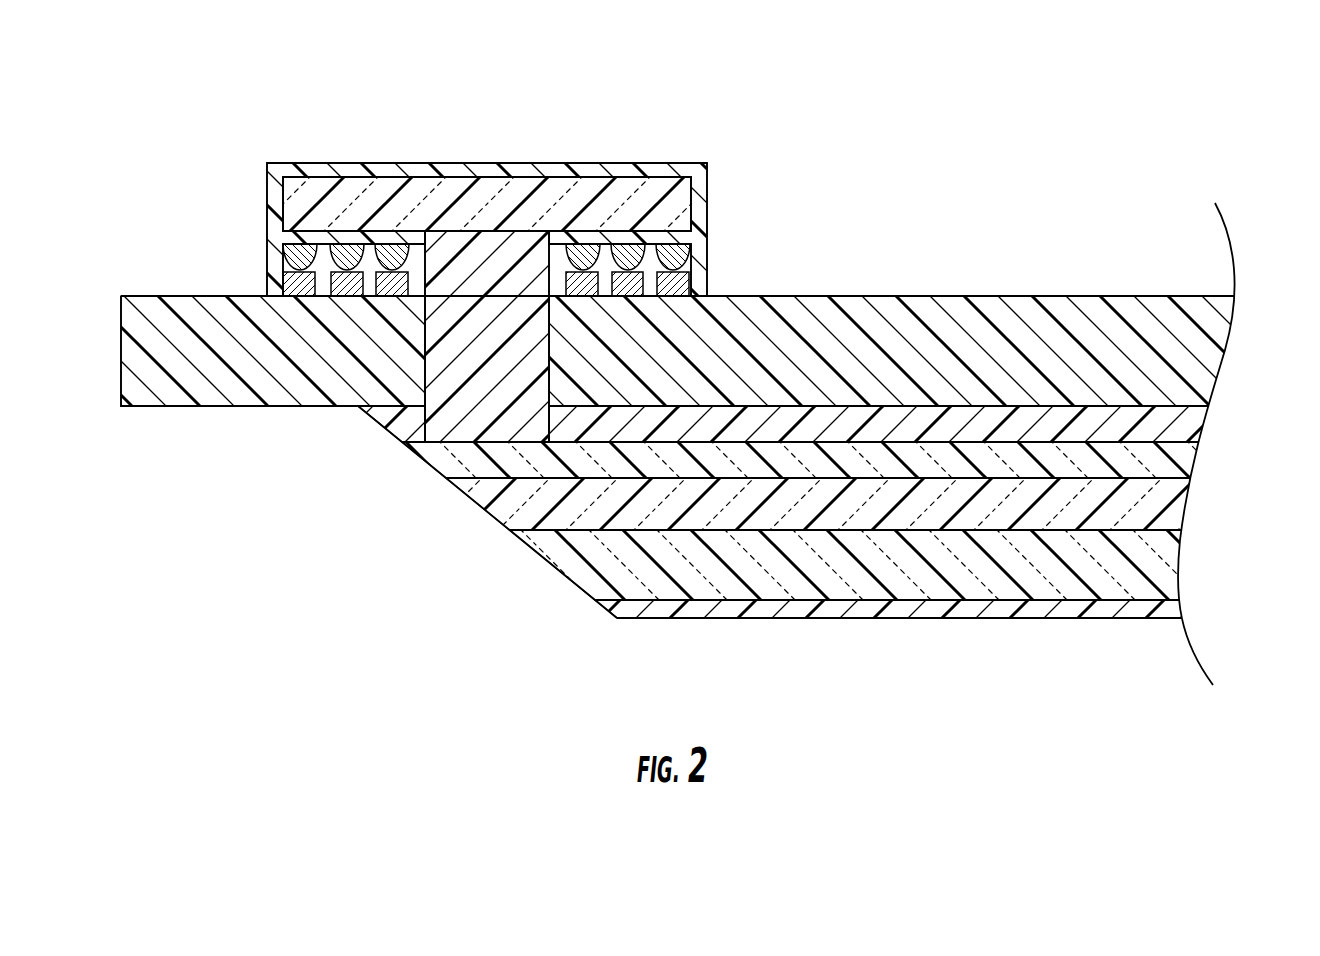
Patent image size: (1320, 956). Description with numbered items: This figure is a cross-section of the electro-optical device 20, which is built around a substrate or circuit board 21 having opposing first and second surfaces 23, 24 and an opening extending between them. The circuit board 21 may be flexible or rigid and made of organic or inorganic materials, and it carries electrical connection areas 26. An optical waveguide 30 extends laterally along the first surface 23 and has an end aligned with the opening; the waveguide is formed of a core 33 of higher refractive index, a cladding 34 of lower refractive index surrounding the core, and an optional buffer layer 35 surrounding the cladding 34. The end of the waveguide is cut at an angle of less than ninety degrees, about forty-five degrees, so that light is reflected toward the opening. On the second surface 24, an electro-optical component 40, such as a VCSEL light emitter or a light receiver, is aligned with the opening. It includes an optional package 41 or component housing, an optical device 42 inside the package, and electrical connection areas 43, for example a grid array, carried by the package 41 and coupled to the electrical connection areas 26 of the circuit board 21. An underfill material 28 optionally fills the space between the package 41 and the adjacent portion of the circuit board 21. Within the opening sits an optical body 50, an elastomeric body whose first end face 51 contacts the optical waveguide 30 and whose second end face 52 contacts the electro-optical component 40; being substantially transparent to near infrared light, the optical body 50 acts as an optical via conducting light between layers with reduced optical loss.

The electro-optical device 20 is at (390, 100).
The circuit board 21 is at (178, 333).
The first surface 23 is at (175, 407).
The second surface 24 is at (1045, 296).
The electrical connection areas 26 is at (677, 283).
The underfill material 28 is at (270, 278).
The optical waveguide 30 is at (720, 640).
The core 33 is at (1173, 509).
The cladding 34 is at (1180, 463).
The buffer layer 35 is at (1180, 425).
The electro-optical component 40 is at (260, 147).
The package 41 is at (668, 168).
The optical device 42 is at (672, 199).
The electrical connection areas 43 is at (578, 250).
The optical body 50 is at (513, 395).
The first end face 51 is at (488, 445).
The second end face 52 is at (513, 297).